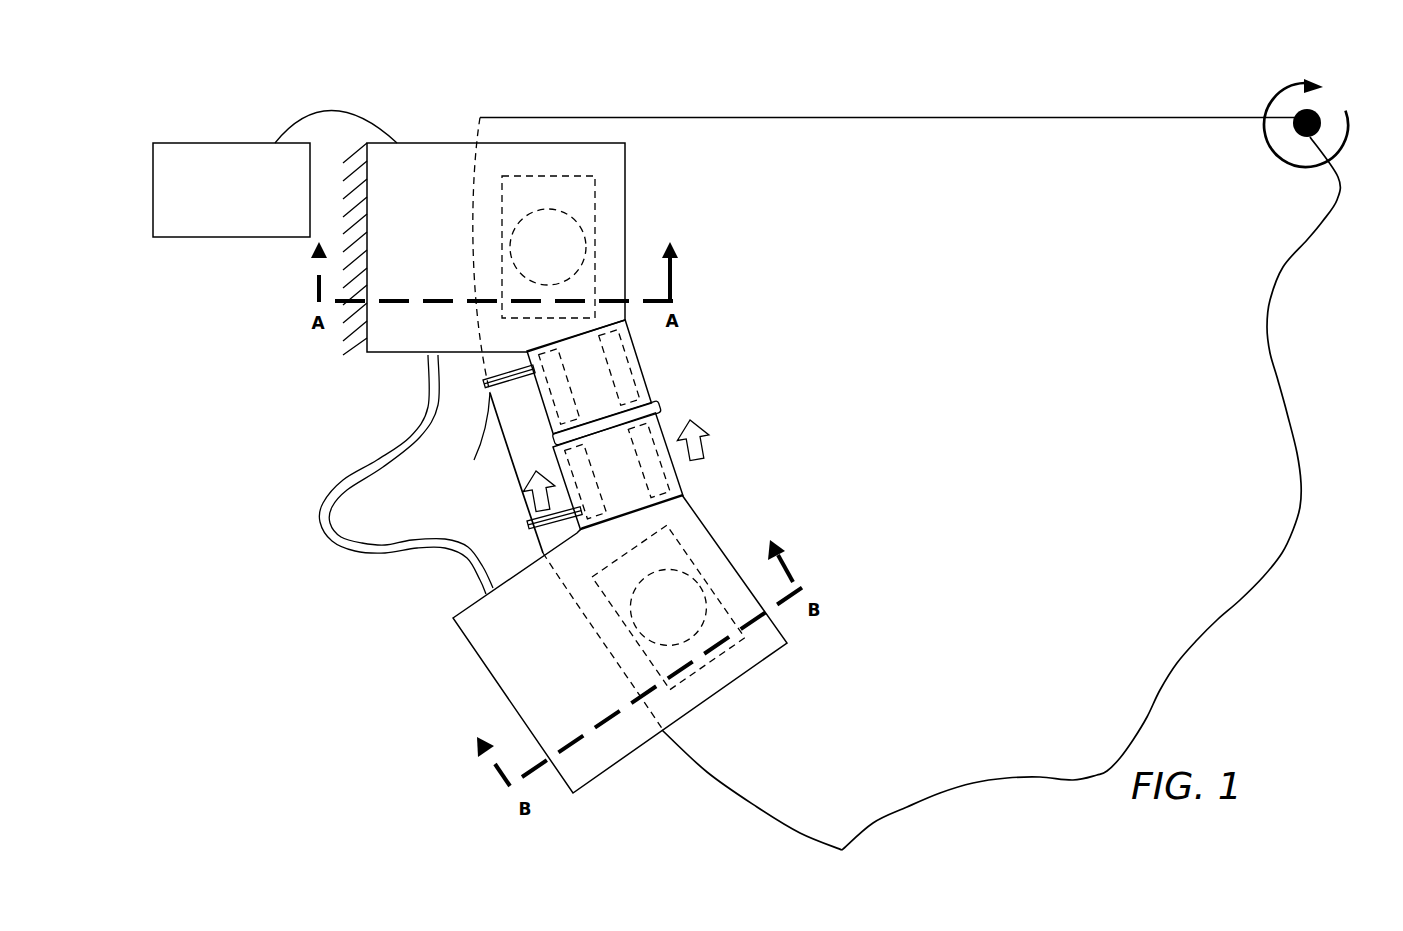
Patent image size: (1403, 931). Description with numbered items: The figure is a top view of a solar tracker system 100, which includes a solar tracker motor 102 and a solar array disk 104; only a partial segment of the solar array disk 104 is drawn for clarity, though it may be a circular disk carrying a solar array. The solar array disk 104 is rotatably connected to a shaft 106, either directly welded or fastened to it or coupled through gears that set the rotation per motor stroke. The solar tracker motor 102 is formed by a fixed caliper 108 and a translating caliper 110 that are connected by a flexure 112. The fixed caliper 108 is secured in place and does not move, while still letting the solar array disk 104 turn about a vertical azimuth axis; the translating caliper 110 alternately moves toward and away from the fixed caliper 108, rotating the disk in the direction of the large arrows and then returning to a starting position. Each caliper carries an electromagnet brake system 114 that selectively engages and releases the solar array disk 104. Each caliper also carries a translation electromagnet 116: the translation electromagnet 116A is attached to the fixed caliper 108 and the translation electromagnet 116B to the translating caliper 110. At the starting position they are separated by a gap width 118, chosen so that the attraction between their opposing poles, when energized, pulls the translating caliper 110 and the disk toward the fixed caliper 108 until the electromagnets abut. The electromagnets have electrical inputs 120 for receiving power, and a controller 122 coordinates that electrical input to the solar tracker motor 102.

The solar tracker system 100 is at (226, 63).
The solar tracker motor 102 is at (396, 762).
The solar array disk 104 is at (907, 484).
The shaft 106 is at (1310, 107).
The fixed caliper 108 is at (385, 345).
The translating caliper 110 is at (505, 667).
The flexure 112 is at (343, 543).
The electromagnet brake system 114 is at (565, 245).
The translation electromagnet 116 is at (604, 424).
The translation electromagnet 116A is at (598, 352).
The translation electromagnet 116B is at (640, 482).
The gap width 118 is at (660, 407).
The electrical inputs 120 is at (530, 522).
The controller 122 is at (233, 222).